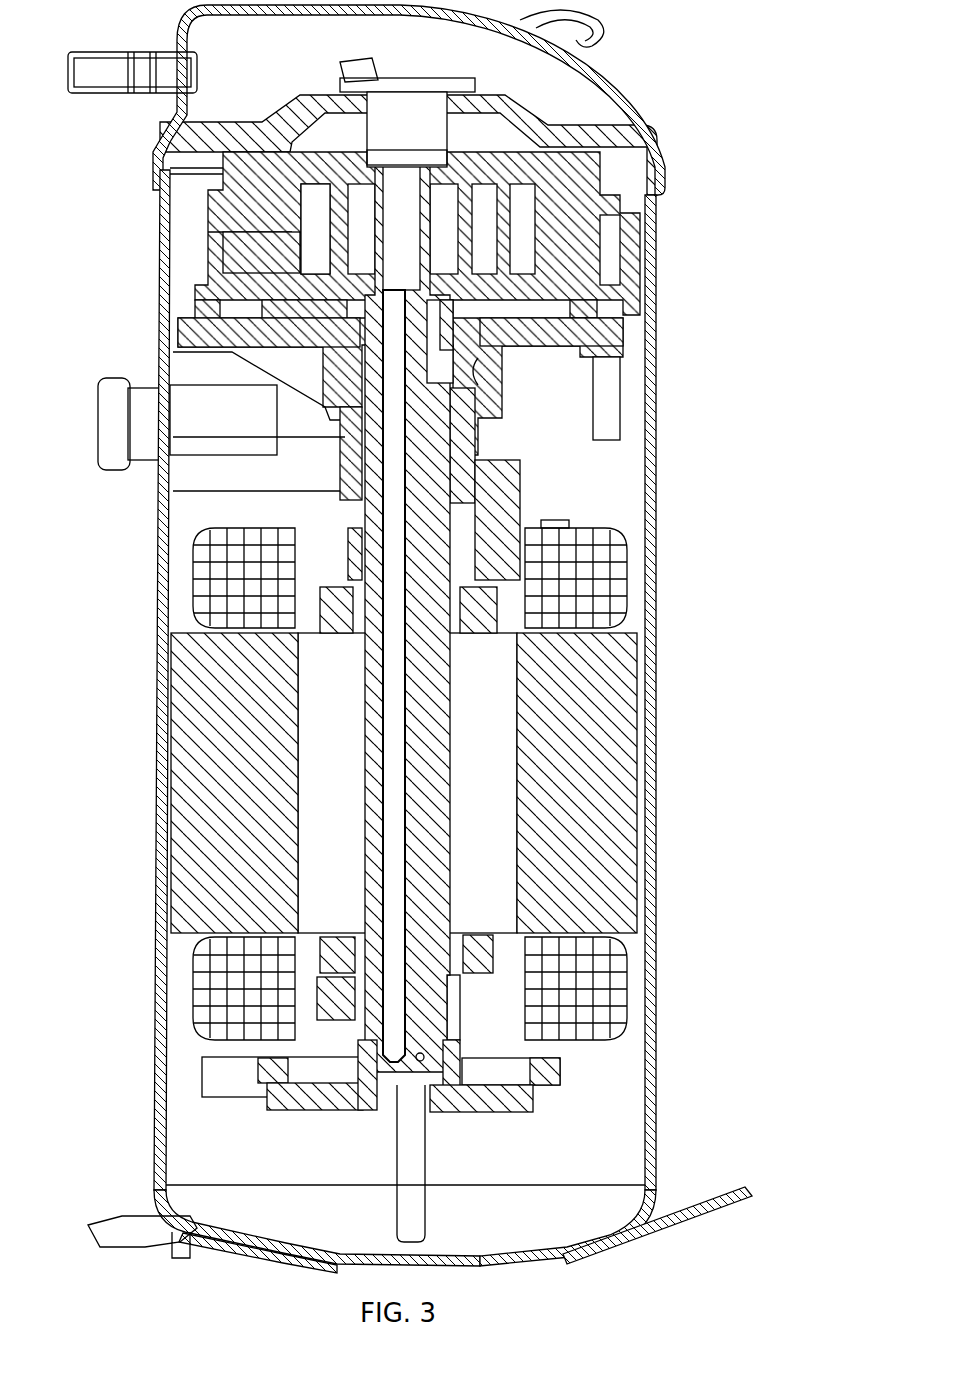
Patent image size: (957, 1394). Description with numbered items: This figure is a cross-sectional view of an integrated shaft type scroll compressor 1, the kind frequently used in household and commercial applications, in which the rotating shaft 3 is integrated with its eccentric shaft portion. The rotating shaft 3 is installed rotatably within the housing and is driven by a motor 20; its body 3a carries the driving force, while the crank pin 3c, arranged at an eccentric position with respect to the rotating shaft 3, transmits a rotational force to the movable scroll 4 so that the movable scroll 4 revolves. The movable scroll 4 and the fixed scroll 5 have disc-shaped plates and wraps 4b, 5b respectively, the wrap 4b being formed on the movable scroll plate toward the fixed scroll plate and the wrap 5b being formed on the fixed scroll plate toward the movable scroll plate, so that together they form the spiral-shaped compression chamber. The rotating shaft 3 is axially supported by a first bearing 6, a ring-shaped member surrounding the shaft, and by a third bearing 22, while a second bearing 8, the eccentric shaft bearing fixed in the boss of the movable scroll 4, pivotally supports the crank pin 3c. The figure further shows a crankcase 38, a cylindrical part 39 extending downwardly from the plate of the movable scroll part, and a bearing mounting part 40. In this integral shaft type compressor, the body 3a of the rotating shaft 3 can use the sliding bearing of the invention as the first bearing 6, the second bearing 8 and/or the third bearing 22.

The scroll compressor 1 is at (657, 90).
The rotating shaft 3 is at (440, 778).
The small diameter part 3a is at (437, 718).
The crank pin 3c is at (415, 337).
The movable scroll 4 is at (617, 292).
The wrap 4b is at (290, 225).
The fixed scroll 5 is at (585, 200).
The wrap 5b is at (300, 255).
The first bearing 6 is at (360, 440).
The second bearing 8 is at (360, 348).
The motor 20 is at (500, 668).
The third bearing 22 is at (363, 1065).
The crankcase 38 is at (497, 385).
The cylindrical part 39 is at (610, 335).
The bearing mounting part 40 is at (350, 495).